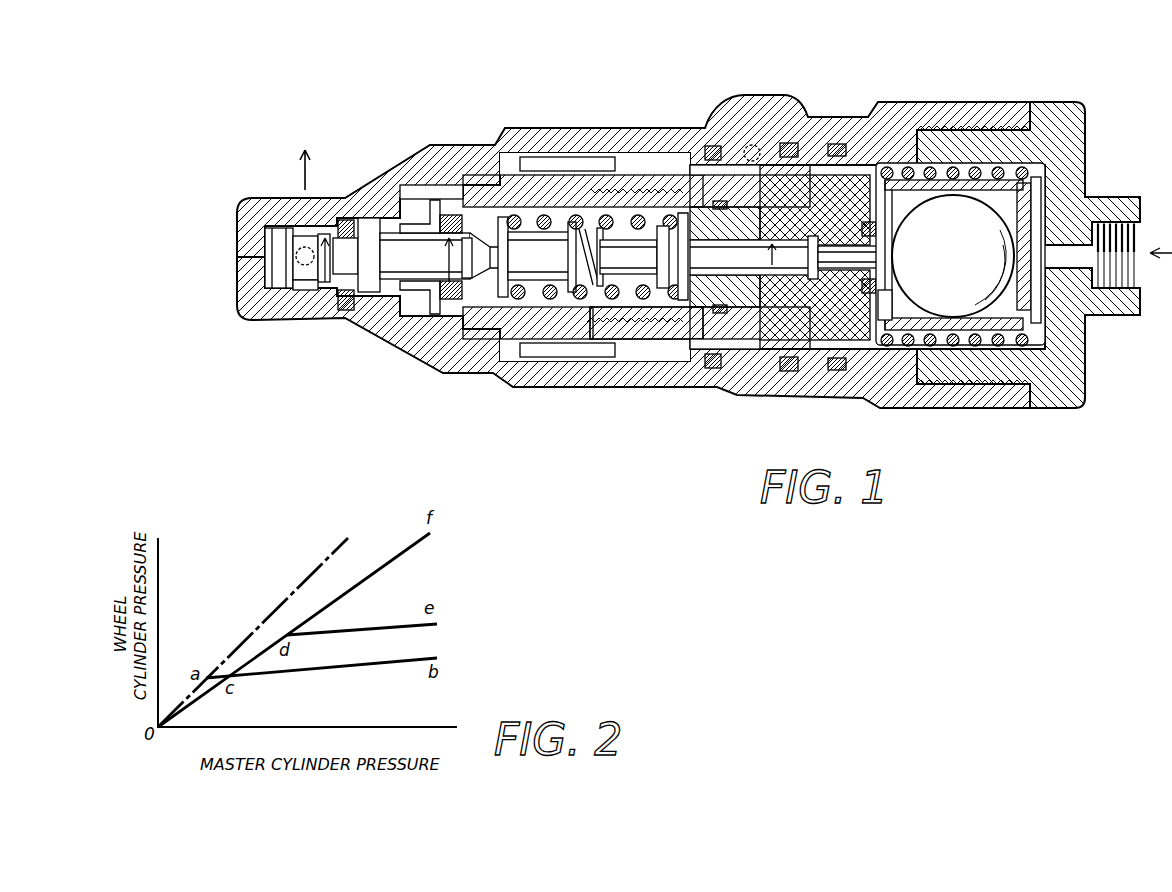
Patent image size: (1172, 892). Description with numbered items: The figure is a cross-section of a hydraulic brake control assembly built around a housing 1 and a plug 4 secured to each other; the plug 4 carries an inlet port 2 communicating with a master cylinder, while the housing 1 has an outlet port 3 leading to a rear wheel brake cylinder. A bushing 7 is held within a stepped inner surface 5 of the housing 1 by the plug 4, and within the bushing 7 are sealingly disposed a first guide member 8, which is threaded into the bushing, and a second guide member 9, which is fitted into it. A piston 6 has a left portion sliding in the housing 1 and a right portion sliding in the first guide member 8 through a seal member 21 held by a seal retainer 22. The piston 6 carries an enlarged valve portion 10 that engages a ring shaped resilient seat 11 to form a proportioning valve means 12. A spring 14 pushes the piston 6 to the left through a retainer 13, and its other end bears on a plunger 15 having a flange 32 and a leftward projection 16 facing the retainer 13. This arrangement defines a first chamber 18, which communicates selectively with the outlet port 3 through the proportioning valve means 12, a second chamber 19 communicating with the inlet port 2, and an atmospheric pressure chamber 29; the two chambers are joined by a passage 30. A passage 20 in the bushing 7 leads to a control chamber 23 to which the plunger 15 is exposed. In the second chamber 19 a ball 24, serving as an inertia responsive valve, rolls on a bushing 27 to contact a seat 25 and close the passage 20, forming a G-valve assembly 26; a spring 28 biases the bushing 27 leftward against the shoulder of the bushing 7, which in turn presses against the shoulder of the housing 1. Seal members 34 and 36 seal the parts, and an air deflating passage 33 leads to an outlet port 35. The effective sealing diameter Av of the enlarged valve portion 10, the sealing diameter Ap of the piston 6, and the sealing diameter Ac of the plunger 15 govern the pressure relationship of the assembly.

The housing 1 is at (838, 120).
The inlet port 2 is at (1128, 275).
The outlet port 3 is at (292, 228).
The plug 4 is at (1060, 112).
The stepped inner surface 5 is at (523, 340).
The piston 6 is at (392, 232).
The bushing 7 is at (790, 340).
The first guide member 8 is at (638, 340).
The second guide member 9 is at (725, 308).
The enlarged valve portion 10 is at (322, 232).
The ring shaped resilient seat 11 is at (346, 218).
The proportioning valve means 12 is at (325, 290).
The retainer 13 is at (540, 248).
The spring 14 is at (598, 215).
The plunger 15 is at (745, 240).
The leftward projection 16 is at (636, 240).
The first chamber 18 is at (410, 190).
The second chamber 19 is at (888, 320).
The passage 20 is at (868, 268).
The seal member 21 is at (450, 278).
The seal retainer 22 is at (415, 312).
The control chamber 23 is at (862, 290).
The ball 24 is at (953, 256).
The seat 25 is at (882, 163).
The G-valve assembly 26 is at (900, 165).
The bushing 27 is at (1012, 345).
The spring 28 is at (978, 384).
The atmospheric pressure chamber 29 is at (593, 320).
The passage 30 is at (837, 144).
The flange 32 is at (680, 340).
The air deflating passage 33 is at (800, 165).
The seal member 34 is at (712, 146).
The outlet port 35 is at (752, 145).
The seal member 36 is at (789, 143).
The effective sealing diameter of the enlarged valve portion Av is at (300, 290).
The sealing diameter of the piston Ap is at (455, 272).
The sealing diameter of the plunger Ac is at (772, 270).